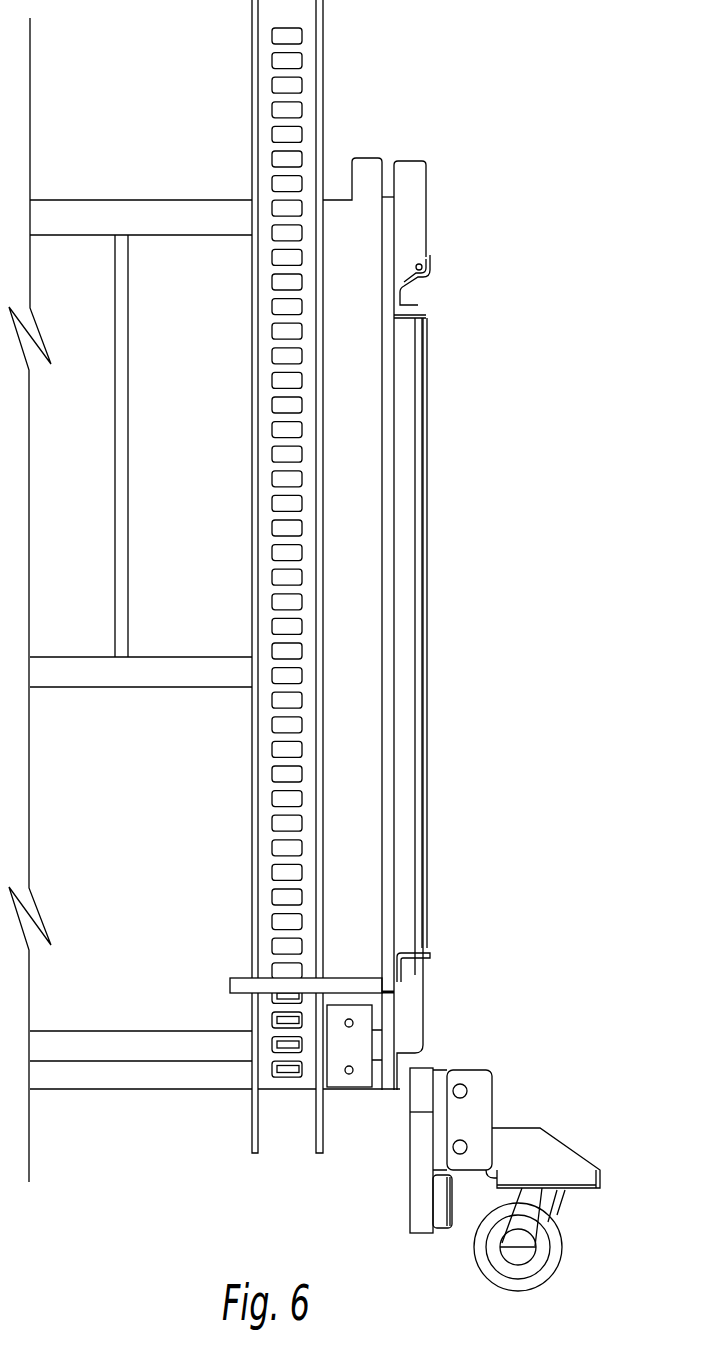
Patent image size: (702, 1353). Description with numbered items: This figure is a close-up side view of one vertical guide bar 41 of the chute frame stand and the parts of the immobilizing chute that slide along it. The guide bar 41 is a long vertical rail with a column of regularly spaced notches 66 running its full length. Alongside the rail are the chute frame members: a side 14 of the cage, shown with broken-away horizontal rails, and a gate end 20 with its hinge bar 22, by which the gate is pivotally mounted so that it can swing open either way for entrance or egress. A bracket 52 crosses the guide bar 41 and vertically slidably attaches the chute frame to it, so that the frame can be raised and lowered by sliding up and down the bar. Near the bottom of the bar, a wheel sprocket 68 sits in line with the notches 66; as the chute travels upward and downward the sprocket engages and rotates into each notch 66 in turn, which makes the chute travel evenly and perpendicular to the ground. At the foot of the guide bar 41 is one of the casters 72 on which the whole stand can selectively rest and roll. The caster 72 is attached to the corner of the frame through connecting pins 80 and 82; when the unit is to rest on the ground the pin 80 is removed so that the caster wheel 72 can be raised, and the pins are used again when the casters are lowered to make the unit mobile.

The side 14 is at (66, 200).
The vertical guide bar 41 is at (321, 42).
The notches 66 is at (272, 158).
The gate end 20 is at (417, 162).
The hinge bar 22 is at (421, 337).
The bracket 52 is at (230, 984).
The wheel sprocket 68 is at (280, 1017).
The connecting pin 80 is at (467, 1088).
The connecting pin 82 is at (467, 1147).
The caster 72 is at (557, 1233).